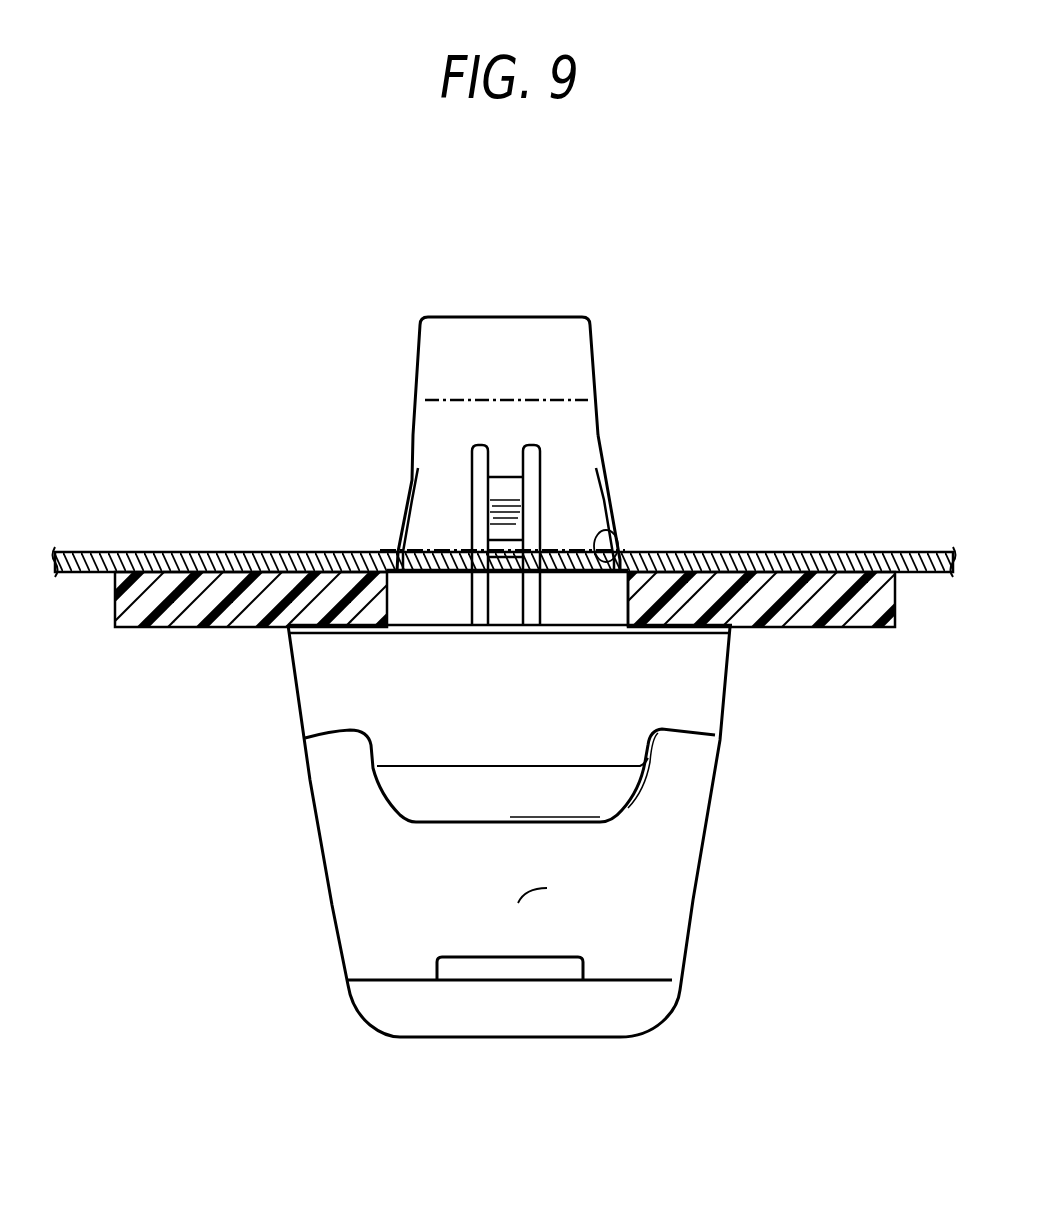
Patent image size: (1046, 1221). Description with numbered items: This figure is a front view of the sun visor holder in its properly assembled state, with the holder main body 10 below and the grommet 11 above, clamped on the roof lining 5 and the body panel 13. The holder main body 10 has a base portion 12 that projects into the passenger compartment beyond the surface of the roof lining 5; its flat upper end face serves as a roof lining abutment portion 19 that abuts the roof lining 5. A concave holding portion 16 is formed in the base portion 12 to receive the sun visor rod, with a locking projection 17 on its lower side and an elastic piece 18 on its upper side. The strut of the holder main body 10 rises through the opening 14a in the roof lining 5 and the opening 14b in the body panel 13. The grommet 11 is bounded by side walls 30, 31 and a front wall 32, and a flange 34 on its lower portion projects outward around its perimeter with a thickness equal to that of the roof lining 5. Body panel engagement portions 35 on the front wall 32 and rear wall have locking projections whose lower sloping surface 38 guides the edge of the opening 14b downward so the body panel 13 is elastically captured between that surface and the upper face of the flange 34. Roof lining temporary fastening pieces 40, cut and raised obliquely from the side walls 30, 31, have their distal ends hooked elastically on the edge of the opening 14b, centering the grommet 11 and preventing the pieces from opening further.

The grommet 11 is at (592, 307).
The holder main body 10 is at (706, 843).
The body panel 13 is at (912, 550).
The roof lining 5 is at (865, 622).
The roof lining abutment portion 19 is at (724, 620).
The side wall 30 is at (414, 420).
The side wall 31 is at (600, 410).
The front wall 32 is at (418, 436).
The roof lining temporary fastening piece 40 is at (408, 495).
The body panel engagement portion 35 is at (505, 490).
The lower sloping surface 38 is at (507, 558).
The opening 14a is at (608, 632).
The opening 14b is at (606, 536).
The flange 34 is at (425, 613).
The base portion 12 is at (714, 736).
The elastic piece 18 is at (454, 790).
The locking projection 17 is at (467, 958).
The holding portion 16 is at (547, 888).